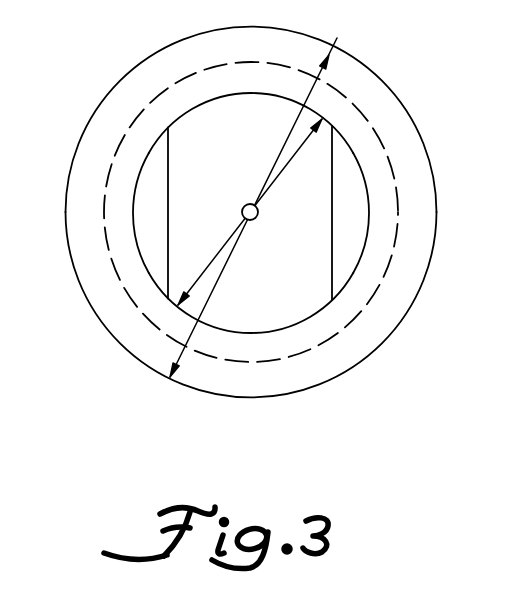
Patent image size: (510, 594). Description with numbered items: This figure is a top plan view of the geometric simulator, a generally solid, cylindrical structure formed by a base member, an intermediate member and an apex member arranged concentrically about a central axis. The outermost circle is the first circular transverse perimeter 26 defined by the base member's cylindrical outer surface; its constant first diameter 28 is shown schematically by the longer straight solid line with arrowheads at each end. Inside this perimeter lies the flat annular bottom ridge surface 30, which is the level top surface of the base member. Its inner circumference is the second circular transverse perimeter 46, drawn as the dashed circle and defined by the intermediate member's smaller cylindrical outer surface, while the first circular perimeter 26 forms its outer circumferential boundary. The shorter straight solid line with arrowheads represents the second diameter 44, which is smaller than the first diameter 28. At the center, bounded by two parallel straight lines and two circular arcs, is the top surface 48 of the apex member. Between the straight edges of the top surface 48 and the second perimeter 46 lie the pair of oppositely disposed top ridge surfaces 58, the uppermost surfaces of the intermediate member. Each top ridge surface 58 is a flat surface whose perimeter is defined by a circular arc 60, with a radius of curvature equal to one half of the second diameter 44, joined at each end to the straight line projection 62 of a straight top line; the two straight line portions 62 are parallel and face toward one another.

The first circular transverse perimeter 26 is at (423, 138).
The first diameter 28 is at (336, 41).
The bottom ridge surface 30 is at (388, 317).
The second diameter 44 is at (366, 80).
The second circular transverse perimeter 46 is at (242, 98).
The top surface 48 is at (233, 173).
The top ridge surfaces 58 is at (143, 177).
The circular arc 60 is at (140, 208).
The straight line projection 62 is at (168, 276).